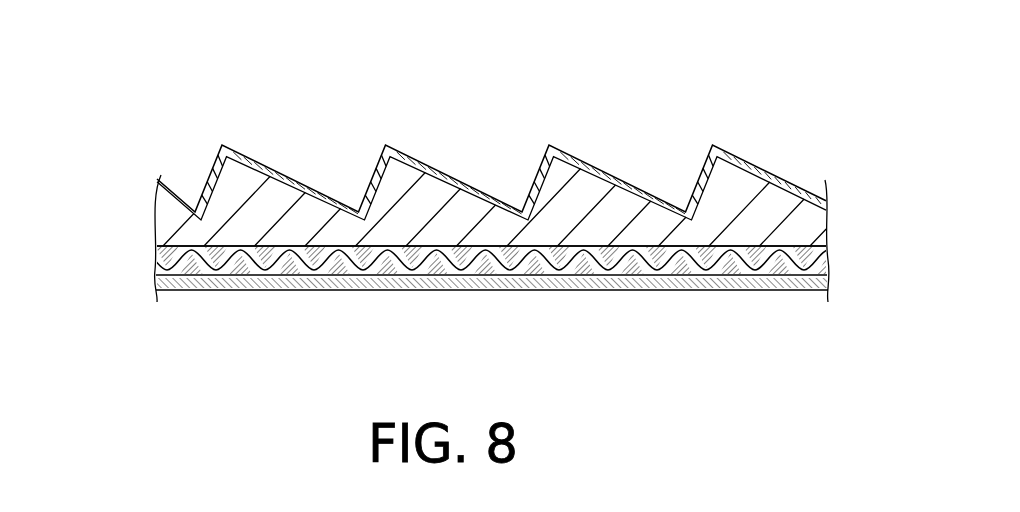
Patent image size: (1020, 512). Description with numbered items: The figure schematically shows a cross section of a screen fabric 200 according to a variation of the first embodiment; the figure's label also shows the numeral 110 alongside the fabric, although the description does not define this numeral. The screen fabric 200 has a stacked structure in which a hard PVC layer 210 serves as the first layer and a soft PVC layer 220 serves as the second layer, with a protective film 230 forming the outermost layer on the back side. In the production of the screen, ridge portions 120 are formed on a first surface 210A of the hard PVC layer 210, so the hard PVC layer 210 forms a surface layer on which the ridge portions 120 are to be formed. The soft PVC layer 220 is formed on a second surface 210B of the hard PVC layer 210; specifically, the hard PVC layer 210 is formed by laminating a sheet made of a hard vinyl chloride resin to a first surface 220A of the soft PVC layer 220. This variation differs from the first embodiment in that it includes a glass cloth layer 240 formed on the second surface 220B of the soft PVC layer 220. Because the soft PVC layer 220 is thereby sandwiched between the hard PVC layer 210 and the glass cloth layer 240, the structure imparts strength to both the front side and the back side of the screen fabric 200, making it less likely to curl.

The screen fabric 200 is at (92, 96).
The base member 110 is at (519, 195).
The ridge portions 120 is at (226, 133).
The hard PVC layer 210 is at (826, 192).
The first surface of the hard PVC layer 210A is at (773, 180).
The second surface of the hard PVC layer 210B is at (778, 196).
The soft PVC layer 220 is at (828, 224).
The first surface of the soft PVC layer 220A is at (707, 247).
The second surface of the soft PVC layer 220B is at (777, 247).
The glass cloth layer 240 is at (828, 262).
The protective film 230 is at (828, 292).